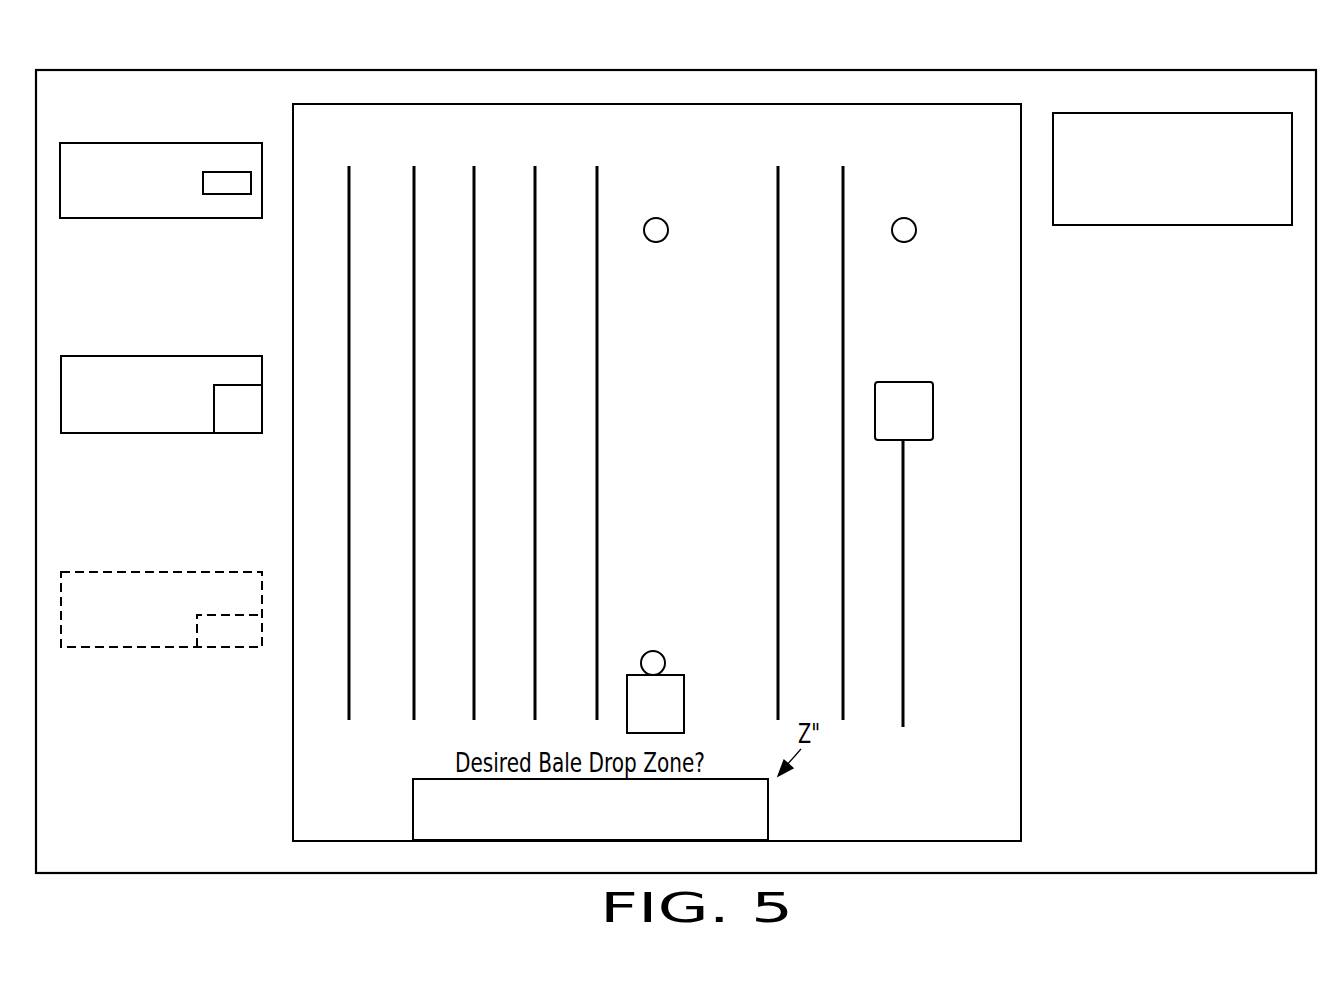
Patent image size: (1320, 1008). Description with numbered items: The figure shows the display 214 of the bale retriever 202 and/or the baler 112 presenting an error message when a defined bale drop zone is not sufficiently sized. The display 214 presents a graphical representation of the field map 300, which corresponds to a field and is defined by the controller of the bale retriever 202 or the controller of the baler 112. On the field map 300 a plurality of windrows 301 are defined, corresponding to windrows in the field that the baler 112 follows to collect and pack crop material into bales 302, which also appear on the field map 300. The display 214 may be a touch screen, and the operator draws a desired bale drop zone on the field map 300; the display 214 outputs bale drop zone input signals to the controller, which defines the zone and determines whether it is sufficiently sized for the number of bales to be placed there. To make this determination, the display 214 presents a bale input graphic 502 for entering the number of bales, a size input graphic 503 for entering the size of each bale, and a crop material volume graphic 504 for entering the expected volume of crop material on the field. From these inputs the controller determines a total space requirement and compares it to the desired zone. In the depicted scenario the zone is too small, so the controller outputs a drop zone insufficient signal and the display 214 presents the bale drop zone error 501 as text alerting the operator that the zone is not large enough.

The display 214 is at (942, 70).
The field map 300 is at (1048, 586).
The windrows 301 is at (349, 178).
The bales 302 is at (664, 240).
The baler 112 is at (914, 382).
The bale retriever 202 is at (686, 690).
The bale drop zone error 501 is at (1188, 225).
The bale input graphic 502 is at (141, 218).
The size input graphic 503 is at (141, 433).
The crop material volume graphic 504 is at (141, 647).